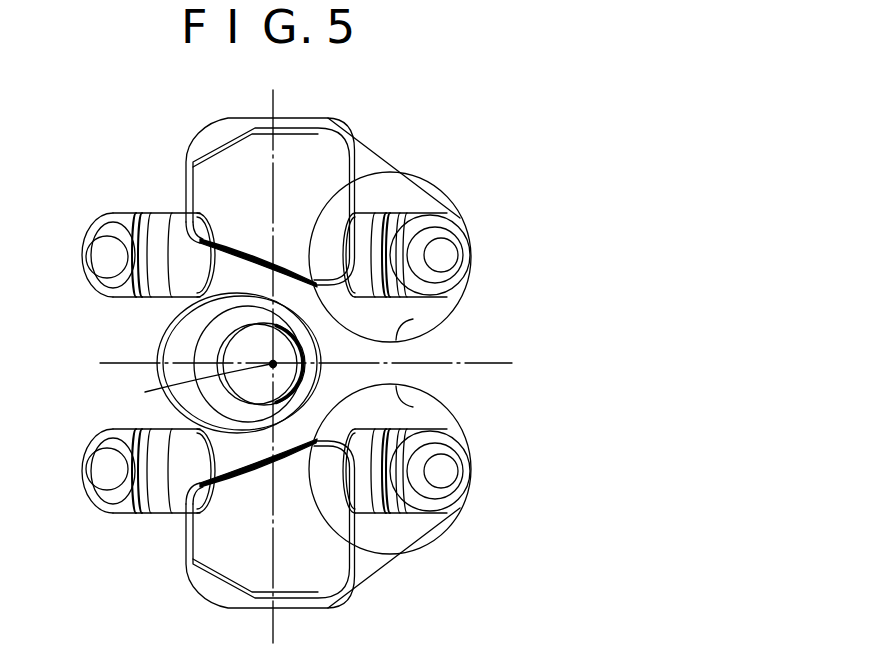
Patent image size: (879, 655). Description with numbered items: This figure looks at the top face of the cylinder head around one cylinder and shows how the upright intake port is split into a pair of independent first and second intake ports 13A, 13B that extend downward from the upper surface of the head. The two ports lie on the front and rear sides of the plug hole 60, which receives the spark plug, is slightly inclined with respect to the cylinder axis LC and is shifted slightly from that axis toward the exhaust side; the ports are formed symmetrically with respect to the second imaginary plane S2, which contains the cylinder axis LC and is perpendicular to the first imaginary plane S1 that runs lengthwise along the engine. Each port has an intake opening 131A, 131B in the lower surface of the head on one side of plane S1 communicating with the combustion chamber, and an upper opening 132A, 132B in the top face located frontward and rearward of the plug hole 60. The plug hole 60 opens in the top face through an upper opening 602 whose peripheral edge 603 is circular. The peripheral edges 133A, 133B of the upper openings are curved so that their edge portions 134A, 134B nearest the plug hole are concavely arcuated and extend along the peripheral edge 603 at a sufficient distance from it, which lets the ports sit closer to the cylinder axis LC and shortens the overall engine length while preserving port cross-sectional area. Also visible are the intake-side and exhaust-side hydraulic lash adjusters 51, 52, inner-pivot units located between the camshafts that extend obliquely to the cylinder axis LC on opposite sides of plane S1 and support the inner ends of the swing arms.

The first intake port 13A is at (326, 515).
The second intake port 13B is at (330, 197).
The intake opening of the first intake port 131A is at (418, 400).
The intake opening of the second intake port 131B is at (412, 328).
The upper opening of the first intake port 132A is at (315, 555).
The upper opening of the second intake port 132B is at (238, 163).
The peripheral edge of the upper opening of the first intake port 133A is at (183, 538).
The peripheral edge of the upper opening of the second intake port 133B is at (328, 118).
The edge portion of peripheral edge 133A close to the plug hole 134A is at (247, 483).
The edge portion of peripheral edge 133B close to the plug hole 134B is at (242, 252).
The intake-side hydraulic lash adjuster 51 is at (433, 222).
The exhaust-side hydraulic lash adjuster 52 is at (104, 225).
The plug hole 60 is at (164, 370).
The upper opening of the plug hole 602 is at (180, 333).
The peripheral edge of the upper opening of the plug hole 603 is at (163, 401).
The cylinder axis LC is at (130, 393).
The first imaginary plane S1 is at (281, 106).
The second imaginary plane S2 is at (450, 363).